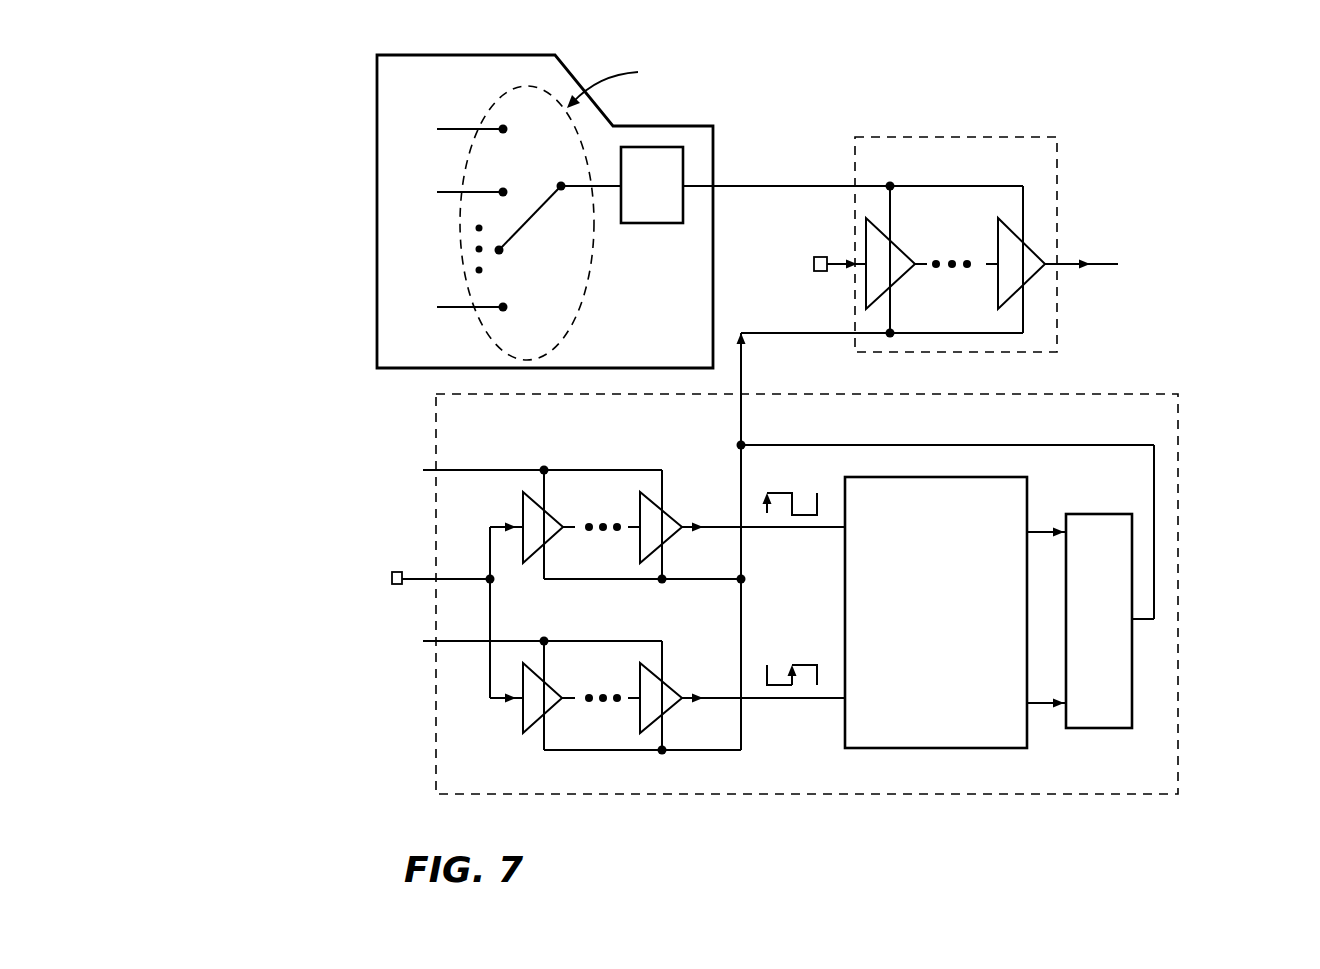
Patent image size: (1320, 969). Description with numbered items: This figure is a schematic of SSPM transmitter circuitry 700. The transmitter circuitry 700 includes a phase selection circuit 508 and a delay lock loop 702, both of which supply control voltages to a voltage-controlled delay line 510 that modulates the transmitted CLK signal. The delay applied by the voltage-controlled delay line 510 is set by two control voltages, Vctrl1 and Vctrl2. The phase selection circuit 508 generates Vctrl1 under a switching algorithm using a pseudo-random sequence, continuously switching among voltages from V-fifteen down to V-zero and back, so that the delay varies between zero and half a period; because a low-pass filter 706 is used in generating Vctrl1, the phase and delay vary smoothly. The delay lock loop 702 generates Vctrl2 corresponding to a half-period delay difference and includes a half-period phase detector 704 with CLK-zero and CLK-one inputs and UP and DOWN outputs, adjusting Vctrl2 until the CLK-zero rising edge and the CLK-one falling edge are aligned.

The SSPM transmitter circuitry 700 is at (1298, 789).
The phase selection circuit 508 is at (377, 213).
The voltage-controlled delay line 510 is at (1058, 182).
The delay lock loop 702 is at (1180, 455).
The T/2 phase detector 704 is at (972, 512).
The low-pass filter 706 is at (642, 224).